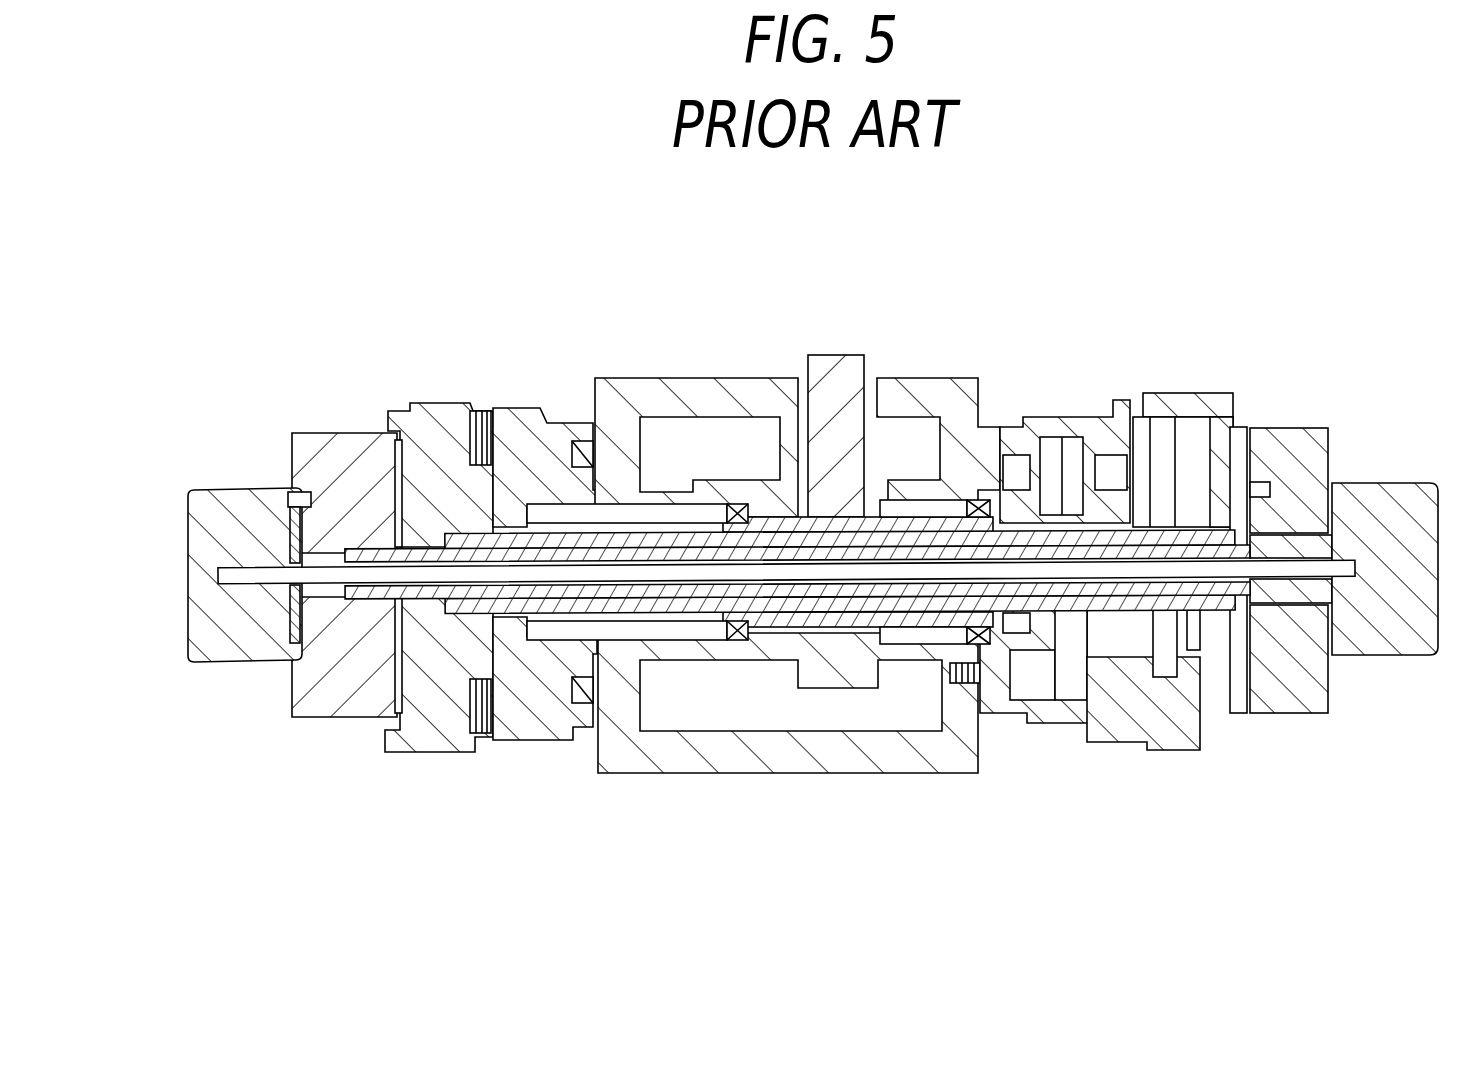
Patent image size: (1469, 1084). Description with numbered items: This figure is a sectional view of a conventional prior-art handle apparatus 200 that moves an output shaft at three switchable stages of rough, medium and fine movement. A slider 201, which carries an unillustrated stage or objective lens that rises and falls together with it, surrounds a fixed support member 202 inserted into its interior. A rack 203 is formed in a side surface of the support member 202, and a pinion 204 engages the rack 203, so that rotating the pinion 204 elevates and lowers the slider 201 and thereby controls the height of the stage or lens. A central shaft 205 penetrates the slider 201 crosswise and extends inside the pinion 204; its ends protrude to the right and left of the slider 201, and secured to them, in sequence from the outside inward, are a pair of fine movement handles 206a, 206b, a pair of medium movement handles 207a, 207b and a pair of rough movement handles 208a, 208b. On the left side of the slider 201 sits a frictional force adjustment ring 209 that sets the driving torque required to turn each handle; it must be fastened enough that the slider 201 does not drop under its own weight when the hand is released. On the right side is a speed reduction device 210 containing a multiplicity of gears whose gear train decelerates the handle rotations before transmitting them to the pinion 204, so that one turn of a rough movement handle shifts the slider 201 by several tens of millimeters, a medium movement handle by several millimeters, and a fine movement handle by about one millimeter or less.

The handle apparatus 200 is at (943, 292).
The slider 201 is at (792, 775).
The fixed support member 202 is at (843, 370).
The rack 203 is at (823, 517).
The pinion 204 is at (843, 627).
The central shaft 205 is at (655, 570).
The fine movement handle 206a is at (237, 662).
The fine movement handle 206b is at (1397, 655).
The medium movement handle 207a is at (330, 433).
The medium movement handle 207b is at (1288, 428).
The rough movement handle 208a is at (437, 403).
The rough movement handle 208b is at (1197, 393).
The frictional force adjustment ring 209 is at (527, 408).
The speed reduction device 210 is at (1075, 425).